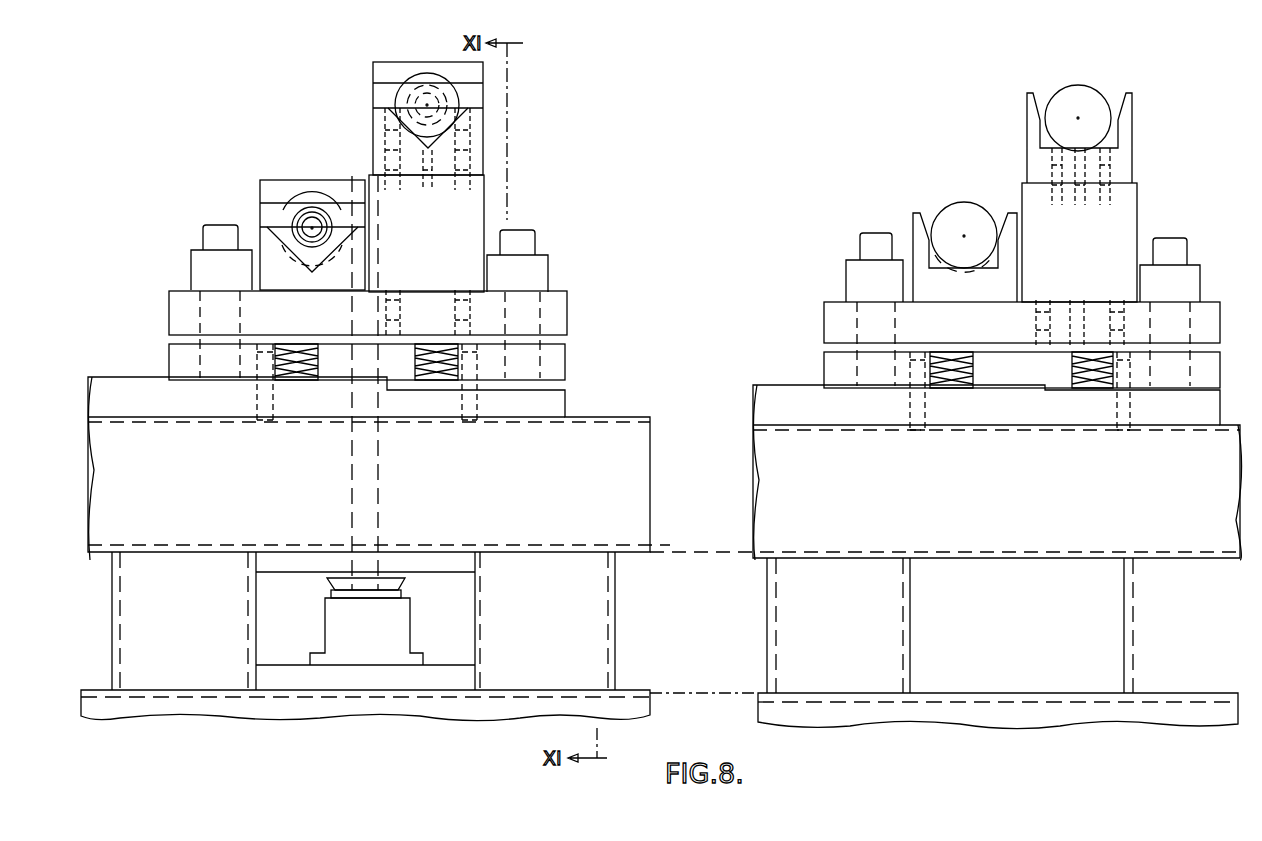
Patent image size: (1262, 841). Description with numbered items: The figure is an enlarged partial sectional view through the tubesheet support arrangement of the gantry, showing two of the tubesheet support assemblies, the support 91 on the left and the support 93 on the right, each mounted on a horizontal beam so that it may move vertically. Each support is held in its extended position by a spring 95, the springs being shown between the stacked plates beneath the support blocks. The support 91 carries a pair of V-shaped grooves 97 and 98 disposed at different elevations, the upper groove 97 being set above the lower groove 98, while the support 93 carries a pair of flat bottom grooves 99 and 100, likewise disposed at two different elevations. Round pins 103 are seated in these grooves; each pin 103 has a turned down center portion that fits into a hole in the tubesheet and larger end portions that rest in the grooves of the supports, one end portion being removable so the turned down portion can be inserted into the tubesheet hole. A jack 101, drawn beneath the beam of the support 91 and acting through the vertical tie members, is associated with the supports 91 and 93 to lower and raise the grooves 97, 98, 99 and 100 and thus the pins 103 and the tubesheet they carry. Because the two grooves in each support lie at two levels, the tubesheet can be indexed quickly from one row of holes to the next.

The tubesheet support assembly 91 is at (471, 207).
The tubesheet support assembly 93 is at (1033, 193).
The spring 95 is at (446, 346).
The V-shaped groove 97 is at (393, 108).
The V-shaped groove 98 is at (277, 217).
The flat bottom groove 99 is at (1117, 135).
The flat bottom groove 100 is at (990, 274).
The jack 101 is at (390, 622).
The round pin 103 is at (427, 85).